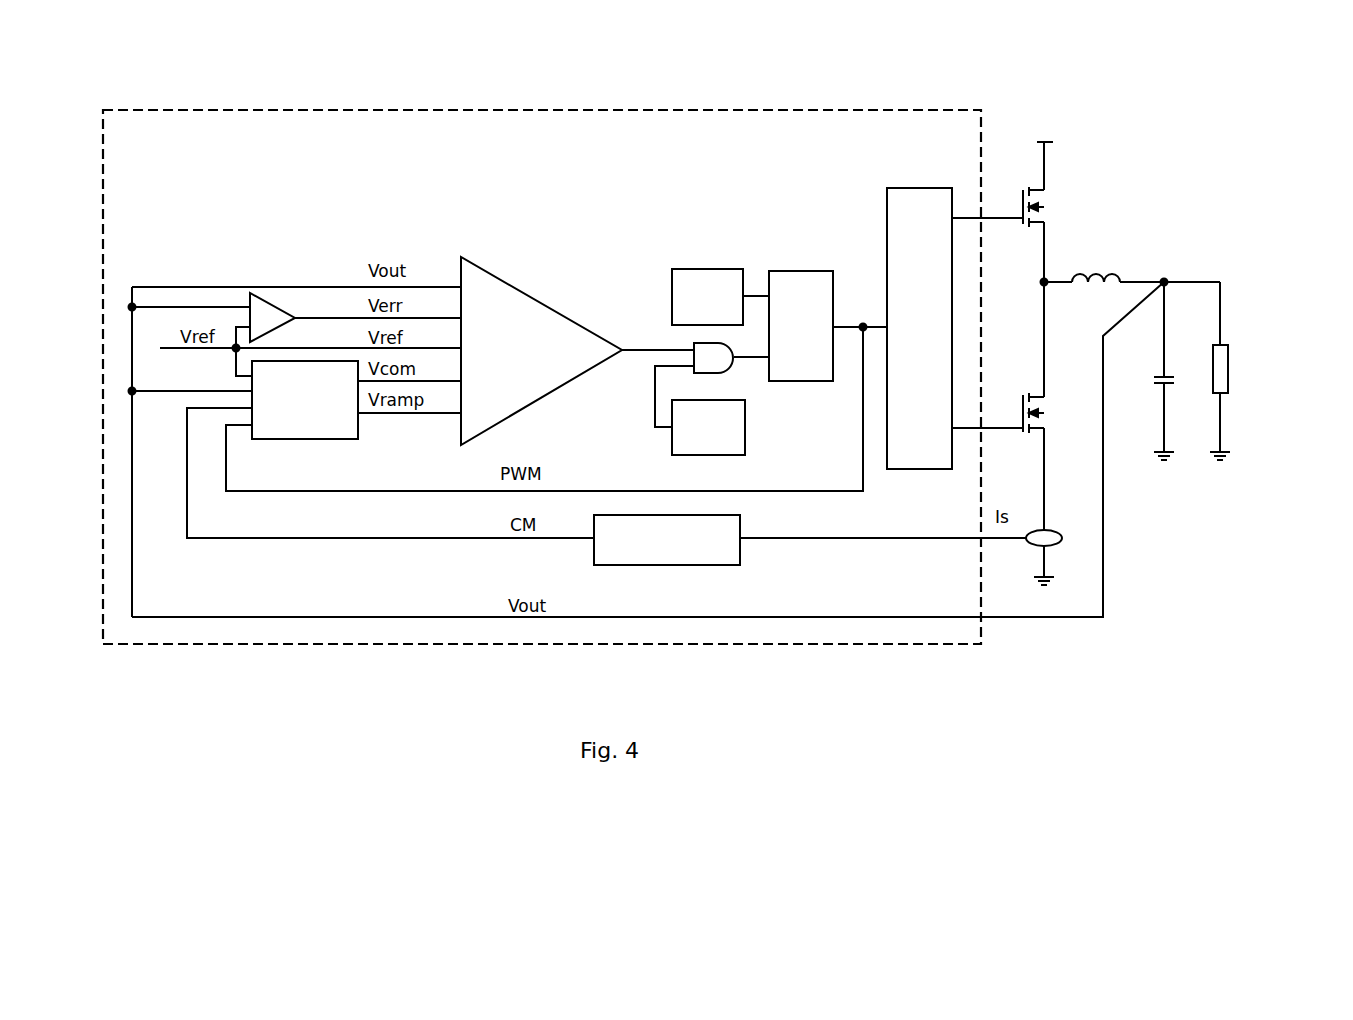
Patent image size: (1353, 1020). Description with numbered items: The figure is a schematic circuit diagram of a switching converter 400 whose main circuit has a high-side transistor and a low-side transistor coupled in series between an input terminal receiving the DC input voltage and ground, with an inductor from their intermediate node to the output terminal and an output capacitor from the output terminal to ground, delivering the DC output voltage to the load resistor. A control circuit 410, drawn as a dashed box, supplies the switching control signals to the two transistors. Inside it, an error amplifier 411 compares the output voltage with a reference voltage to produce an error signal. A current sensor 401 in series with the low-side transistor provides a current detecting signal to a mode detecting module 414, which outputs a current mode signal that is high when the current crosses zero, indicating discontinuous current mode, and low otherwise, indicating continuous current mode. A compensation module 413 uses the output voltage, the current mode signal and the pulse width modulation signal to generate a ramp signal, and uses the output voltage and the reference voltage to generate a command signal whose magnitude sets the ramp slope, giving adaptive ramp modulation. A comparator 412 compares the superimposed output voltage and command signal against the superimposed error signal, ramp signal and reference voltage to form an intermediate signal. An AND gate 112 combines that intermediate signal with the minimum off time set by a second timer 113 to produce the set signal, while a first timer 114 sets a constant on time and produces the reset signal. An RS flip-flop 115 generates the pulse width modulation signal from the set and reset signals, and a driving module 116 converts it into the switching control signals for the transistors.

The switching converter 400 is at (1177, 673).
The control circuit 410 is at (212, 160).
The error amplifier 411 is at (292, 302).
The comparator 412 is at (508, 283).
The compensation module 413 is at (352, 434).
The mode detecting module 414 is at (740, 556).
The AND gate 112 is at (727, 373).
The second timer 113 is at (745, 425).
The first timer 114 is at (708, 269).
The RS flip-flop 115 is at (800, 271).
The driving module 116 is at (912, 188).
The current sensor 401 is at (1062, 534).